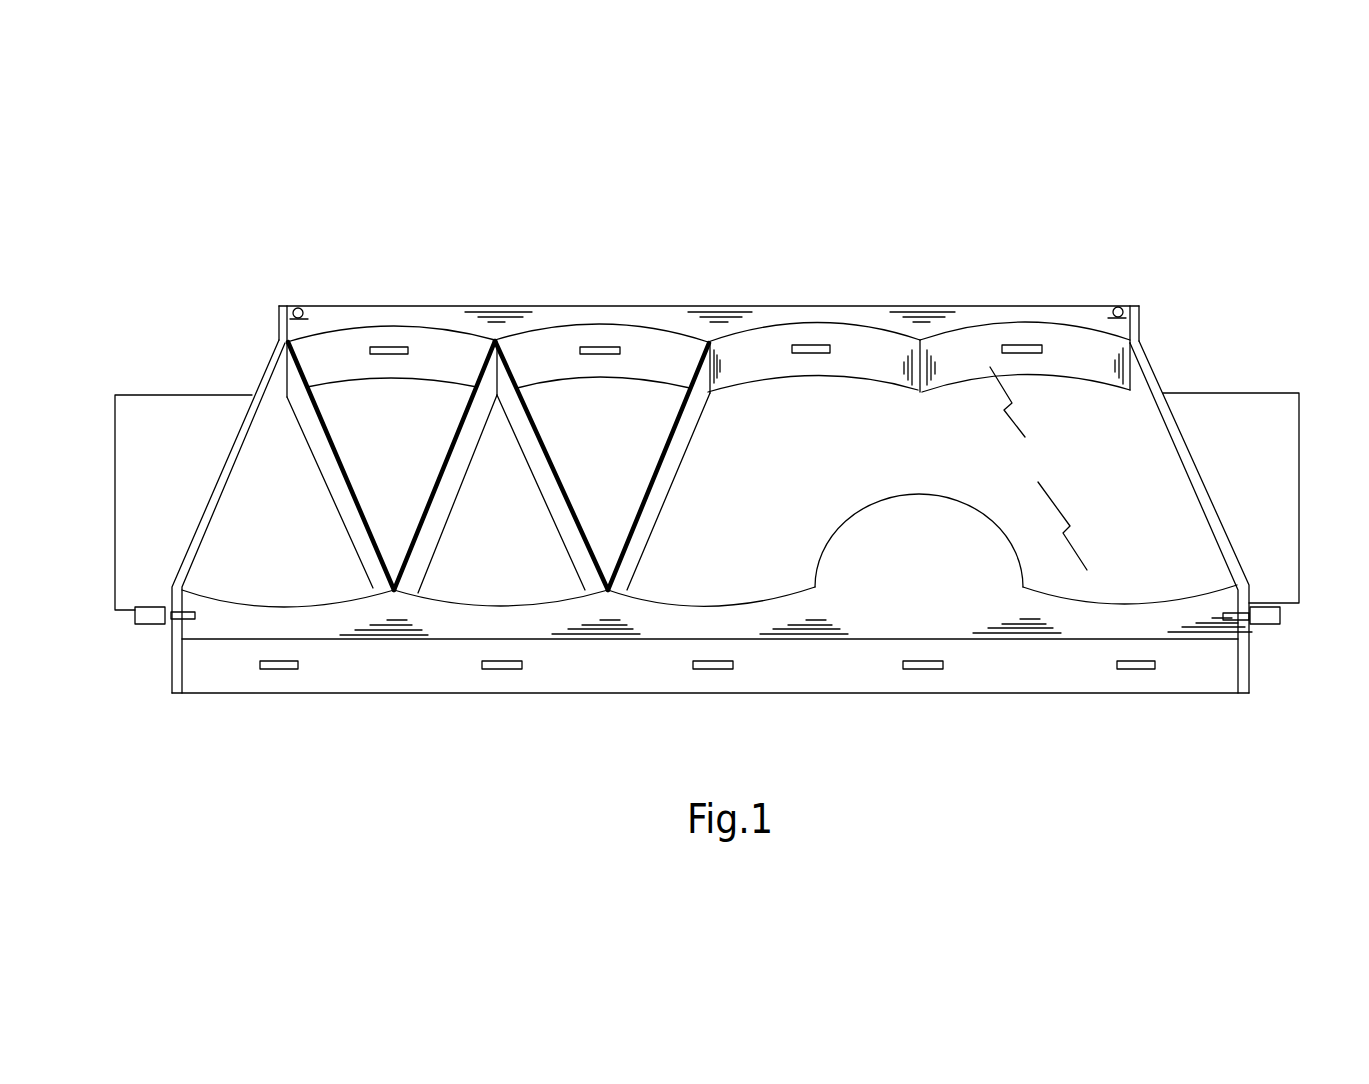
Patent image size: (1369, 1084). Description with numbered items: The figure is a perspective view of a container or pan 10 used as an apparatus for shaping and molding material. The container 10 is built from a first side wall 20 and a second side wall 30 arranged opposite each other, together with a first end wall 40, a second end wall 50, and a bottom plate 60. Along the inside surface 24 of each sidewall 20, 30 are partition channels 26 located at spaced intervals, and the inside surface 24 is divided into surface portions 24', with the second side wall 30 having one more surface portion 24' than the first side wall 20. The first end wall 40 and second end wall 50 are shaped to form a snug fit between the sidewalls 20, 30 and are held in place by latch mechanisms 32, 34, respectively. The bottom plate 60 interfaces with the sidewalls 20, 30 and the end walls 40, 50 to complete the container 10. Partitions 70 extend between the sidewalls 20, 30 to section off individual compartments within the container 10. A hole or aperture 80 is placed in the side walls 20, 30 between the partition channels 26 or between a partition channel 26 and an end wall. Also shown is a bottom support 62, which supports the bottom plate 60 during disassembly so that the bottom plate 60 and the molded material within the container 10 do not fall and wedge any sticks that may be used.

The container or pan 10 is at (474, 191).
The first side wall 20 is at (862, 305).
The inside surface 24 is at (1038, 468).
The surface portion 24' is at (708, 309).
The partition channel 26 is at (920, 392).
The second side wall 30 is at (963, 693).
The latch mechanism 32 is at (1273, 623).
The latch mechanism 34 is at (148, 624).
The first end wall 40 is at (1148, 437).
The second end wall 50 is at (265, 367).
The bottom plate 60 is at (792, 483).
The bottom support 62 is at (1277, 467).
The partition 70 is at (445, 460).
The hole or aperture 80 is at (498, 663).